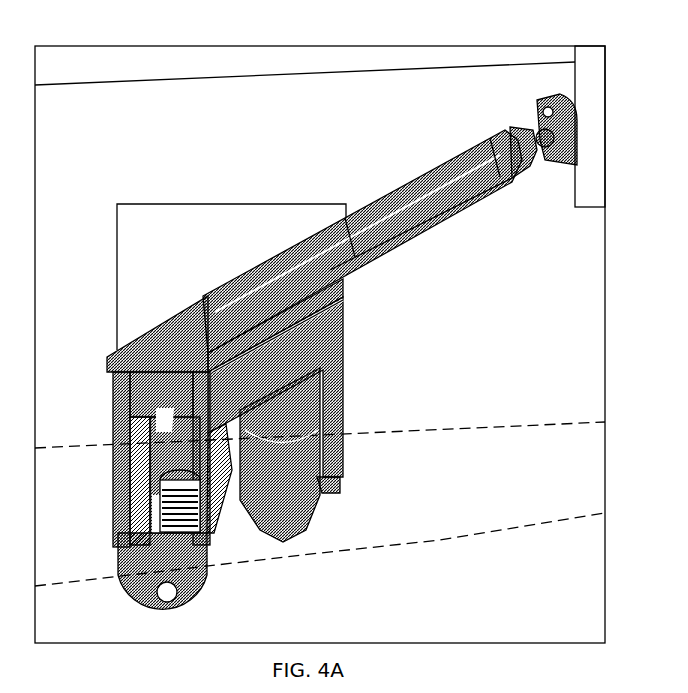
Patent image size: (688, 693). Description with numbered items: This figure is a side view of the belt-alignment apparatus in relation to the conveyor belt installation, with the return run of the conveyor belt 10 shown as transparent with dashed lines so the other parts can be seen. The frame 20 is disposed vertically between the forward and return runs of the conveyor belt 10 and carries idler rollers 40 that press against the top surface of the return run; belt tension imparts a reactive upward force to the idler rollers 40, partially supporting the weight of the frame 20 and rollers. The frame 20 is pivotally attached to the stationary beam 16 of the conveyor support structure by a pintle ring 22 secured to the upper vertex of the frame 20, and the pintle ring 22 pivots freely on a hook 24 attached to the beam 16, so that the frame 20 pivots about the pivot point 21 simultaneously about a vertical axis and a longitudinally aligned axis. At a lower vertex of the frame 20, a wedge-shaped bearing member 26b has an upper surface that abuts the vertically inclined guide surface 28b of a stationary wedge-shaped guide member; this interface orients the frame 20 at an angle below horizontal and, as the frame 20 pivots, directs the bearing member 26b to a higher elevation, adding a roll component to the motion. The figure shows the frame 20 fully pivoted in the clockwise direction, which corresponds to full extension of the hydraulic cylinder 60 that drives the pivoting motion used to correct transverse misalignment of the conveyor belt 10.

The conveyor belt 10 is at (478, 538).
The beam 16 is at (575, 70).
The frame 20 is at (428, 168).
The pivot point 21 is at (533, 131).
The pintle ring 22 is at (527, 137).
The hook 24 is at (563, 168).
The bearing member 26b is at (107, 358).
The guide surface 28b is at (168, 318).
The idler roller 40 is at (265, 520).
The hydraulic cylinder 60 is at (440, 228).